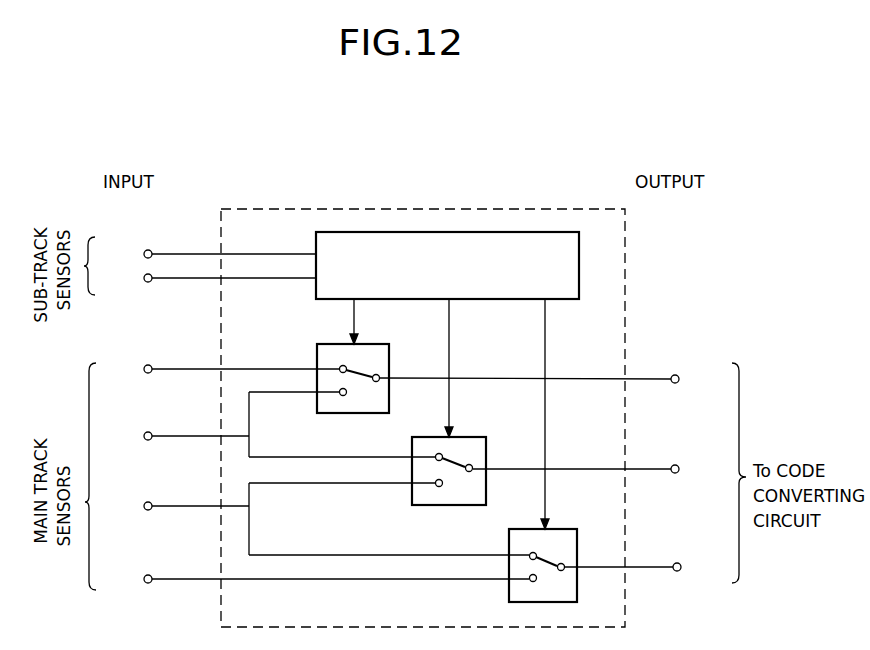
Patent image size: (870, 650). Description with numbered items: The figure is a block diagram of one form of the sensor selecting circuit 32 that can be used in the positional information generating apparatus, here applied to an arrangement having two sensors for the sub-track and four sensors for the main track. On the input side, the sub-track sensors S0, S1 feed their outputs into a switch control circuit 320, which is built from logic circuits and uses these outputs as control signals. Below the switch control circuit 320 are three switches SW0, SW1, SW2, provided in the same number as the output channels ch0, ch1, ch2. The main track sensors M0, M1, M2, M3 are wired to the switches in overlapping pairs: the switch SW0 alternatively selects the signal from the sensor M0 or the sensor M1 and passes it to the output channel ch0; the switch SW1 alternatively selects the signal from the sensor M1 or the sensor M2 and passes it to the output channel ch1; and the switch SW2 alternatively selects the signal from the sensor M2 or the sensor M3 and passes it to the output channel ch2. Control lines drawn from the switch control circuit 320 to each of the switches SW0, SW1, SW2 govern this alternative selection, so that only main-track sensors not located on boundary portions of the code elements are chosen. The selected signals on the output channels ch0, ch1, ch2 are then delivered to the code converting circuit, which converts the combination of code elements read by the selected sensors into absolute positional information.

The sensor selecting circuit 32 is at (290, 207).
The switch control circuit 320 is at (568, 299).
The switch SW0 is at (343, 413).
The switch SW1 is at (443, 505).
The switch SW2 is at (509, 598).
The sub-track sensor S0 is at (211, 254).
The sub-track sensor S1 is at (211, 278).
The main track sensor M0 is at (223, 371).
The main track sensor M1 is at (271, 424).
The main track sensor M2 is at (318, 519).
The main track sensor M3 is at (318, 581).
The output channel ch0 is at (548, 380).
The output channel ch1 is at (595, 470).
The output channel ch2 is at (641, 568).